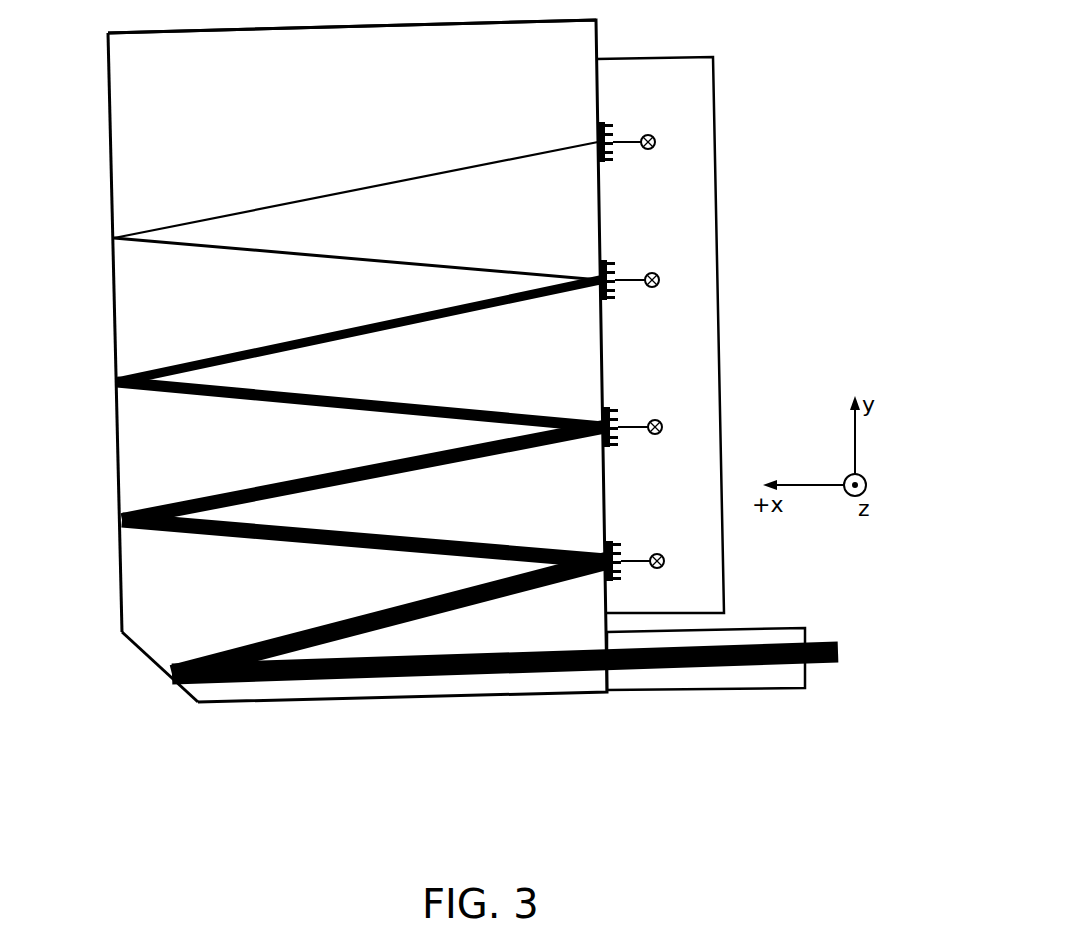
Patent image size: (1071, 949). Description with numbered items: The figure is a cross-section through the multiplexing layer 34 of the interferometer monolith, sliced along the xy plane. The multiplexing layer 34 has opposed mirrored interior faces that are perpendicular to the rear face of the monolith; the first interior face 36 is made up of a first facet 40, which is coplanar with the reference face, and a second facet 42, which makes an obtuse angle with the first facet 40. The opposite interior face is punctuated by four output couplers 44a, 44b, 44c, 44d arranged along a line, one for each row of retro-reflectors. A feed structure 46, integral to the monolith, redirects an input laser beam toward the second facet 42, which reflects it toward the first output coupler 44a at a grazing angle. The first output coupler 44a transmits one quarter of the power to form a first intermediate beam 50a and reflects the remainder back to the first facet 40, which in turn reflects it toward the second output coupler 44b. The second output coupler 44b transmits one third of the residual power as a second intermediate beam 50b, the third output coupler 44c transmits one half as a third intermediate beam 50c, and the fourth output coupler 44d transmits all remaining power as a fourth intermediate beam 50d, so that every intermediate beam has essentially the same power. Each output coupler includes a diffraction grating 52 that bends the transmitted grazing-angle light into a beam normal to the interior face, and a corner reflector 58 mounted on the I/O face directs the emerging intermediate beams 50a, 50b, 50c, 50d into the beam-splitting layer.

The multiplexing layer 34 is at (351, 101).
The first mirrored interior face 36 is at (96, 153).
The first facet 40 is at (113, 323).
The second facet 42 is at (160, 664).
The first output coupler 44a is at (606, 550).
The second output coupler 44b is at (603, 417).
The third output coupler 44c is at (600, 270).
The fourth output coupler 44d is at (597, 132).
The first intermediate beam 50a is at (657, 554).
The second intermediate beam 50b is at (655, 420).
The third intermediate beam 50c is at (652, 273).
The fourth intermediate beam 50d is at (648, 135).
The diffraction grating 52 is at (621, 579).
The corner reflector 58 is at (719, 277).
The feed structure 46 is at (693, 690).